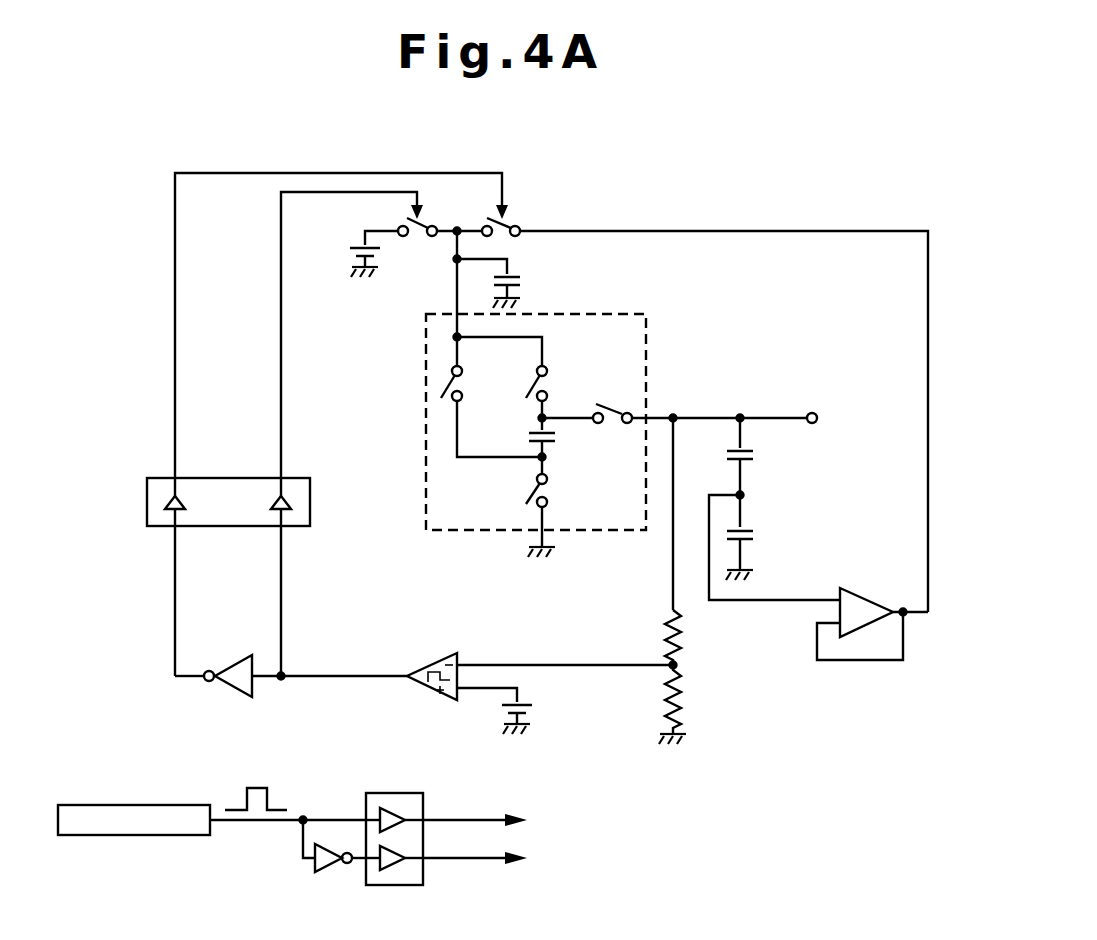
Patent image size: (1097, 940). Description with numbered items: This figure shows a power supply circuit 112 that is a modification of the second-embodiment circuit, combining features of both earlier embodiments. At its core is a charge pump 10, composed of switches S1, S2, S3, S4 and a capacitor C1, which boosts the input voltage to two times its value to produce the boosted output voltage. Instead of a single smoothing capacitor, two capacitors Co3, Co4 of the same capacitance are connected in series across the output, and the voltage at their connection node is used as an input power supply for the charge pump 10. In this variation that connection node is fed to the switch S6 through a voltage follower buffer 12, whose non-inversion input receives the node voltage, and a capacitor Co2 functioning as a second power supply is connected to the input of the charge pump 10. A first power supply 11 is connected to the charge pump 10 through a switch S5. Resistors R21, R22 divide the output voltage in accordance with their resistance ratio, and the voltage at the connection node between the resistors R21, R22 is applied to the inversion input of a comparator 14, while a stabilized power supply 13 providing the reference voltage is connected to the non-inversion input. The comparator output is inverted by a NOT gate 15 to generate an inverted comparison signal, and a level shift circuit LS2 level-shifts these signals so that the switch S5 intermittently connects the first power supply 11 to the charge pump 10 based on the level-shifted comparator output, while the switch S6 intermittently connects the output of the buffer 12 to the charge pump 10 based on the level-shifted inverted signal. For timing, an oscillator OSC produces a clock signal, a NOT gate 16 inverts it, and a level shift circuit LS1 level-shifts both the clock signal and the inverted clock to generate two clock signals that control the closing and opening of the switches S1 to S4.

The booster/regulator circuit 112 is at (826, 846).
The charge pump 10 is at (646, 331).
The first power supply 11 is at (356, 247).
The voltage follower buffer 12 is at (860, 599).
The stabilized power supply 13 is at (530, 712).
The comparator 14 is at (435, 661).
The NOT gate 15 is at (240, 661).
The NOT gate 16 is at (316, 881).
The switch S1 is at (548, 381).
The switch S2 is at (548, 490).
The switch S3 is at (463, 381).
The switch S4 is at (612, 424).
The switch S5 is at (432, 237).
The switch S6 is at (516, 225).
The capacitor C1 is at (532, 432).
The capacitor Co2 is at (519, 280).
The capacitor Co3 is at (752, 460).
The capacitor Co4 is at (752, 540).
The resistor R21 is at (688, 632).
The resistor R22 is at (688, 700).
The level shift circuit LS1 is at (398, 793).
The level shift circuit LS2 is at (228, 478).
The oscillator OSC is at (135, 805).